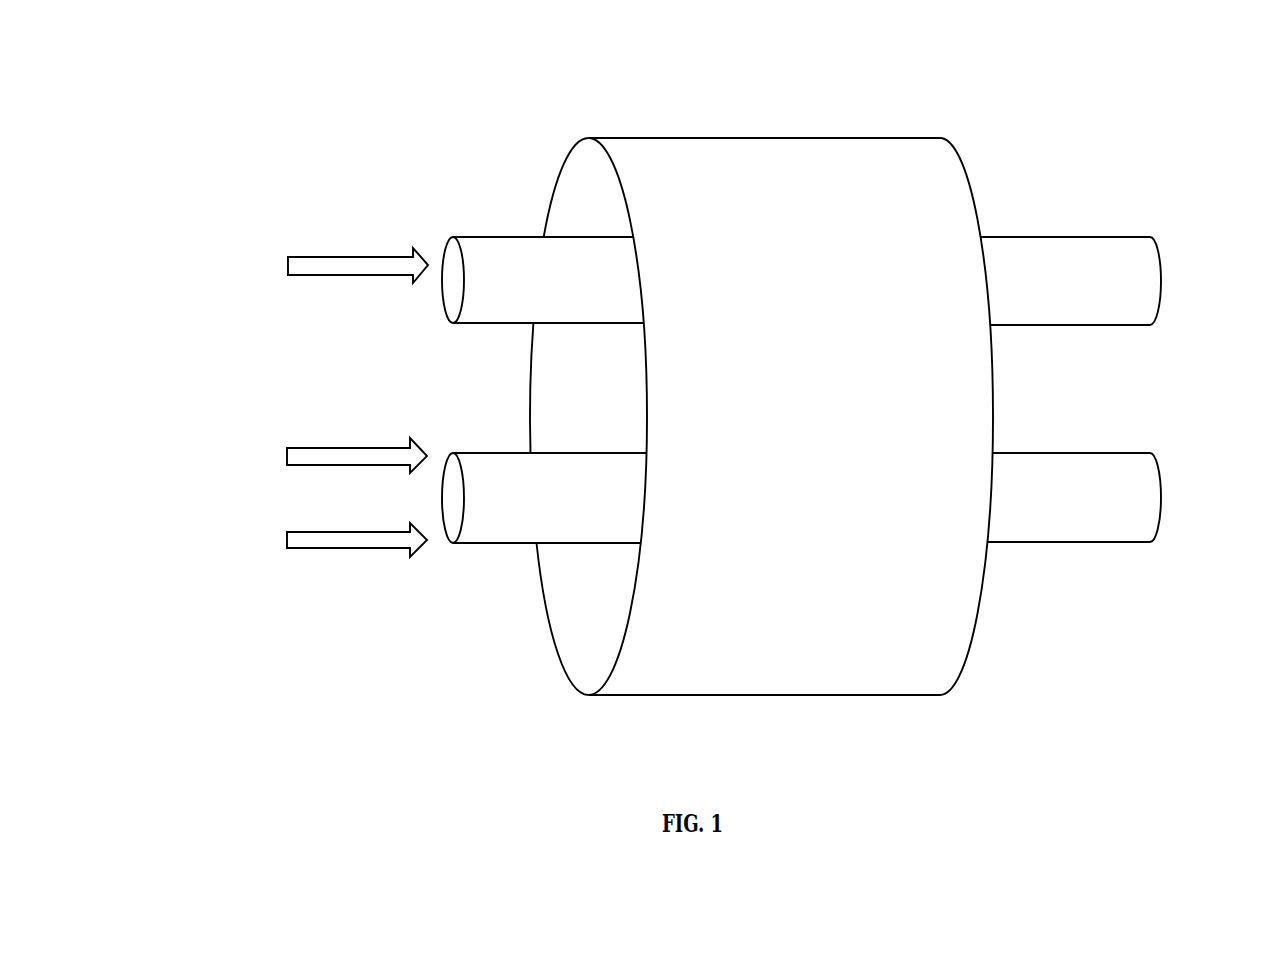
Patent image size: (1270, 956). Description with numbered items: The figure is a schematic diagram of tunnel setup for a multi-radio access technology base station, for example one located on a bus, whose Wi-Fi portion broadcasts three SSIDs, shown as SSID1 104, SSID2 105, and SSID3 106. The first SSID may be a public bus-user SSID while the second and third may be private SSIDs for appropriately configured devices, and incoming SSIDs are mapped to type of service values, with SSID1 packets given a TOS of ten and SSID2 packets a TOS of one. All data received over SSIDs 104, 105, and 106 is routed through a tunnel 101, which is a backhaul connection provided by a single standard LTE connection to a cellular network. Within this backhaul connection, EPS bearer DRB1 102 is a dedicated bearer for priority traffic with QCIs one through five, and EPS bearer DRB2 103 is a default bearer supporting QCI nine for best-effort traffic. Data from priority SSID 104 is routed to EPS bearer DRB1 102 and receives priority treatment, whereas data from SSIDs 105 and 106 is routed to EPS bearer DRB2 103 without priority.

The tunnel 101 is at (637, 135).
The EPS bearer DRB1 102 is at (1163, 288).
The EPS bearer DRB2 103 is at (1163, 490).
The SSID1 104 is at (258, 187).
The SSID2 105 is at (398, 438).
The SSID3 106 is at (293, 558).